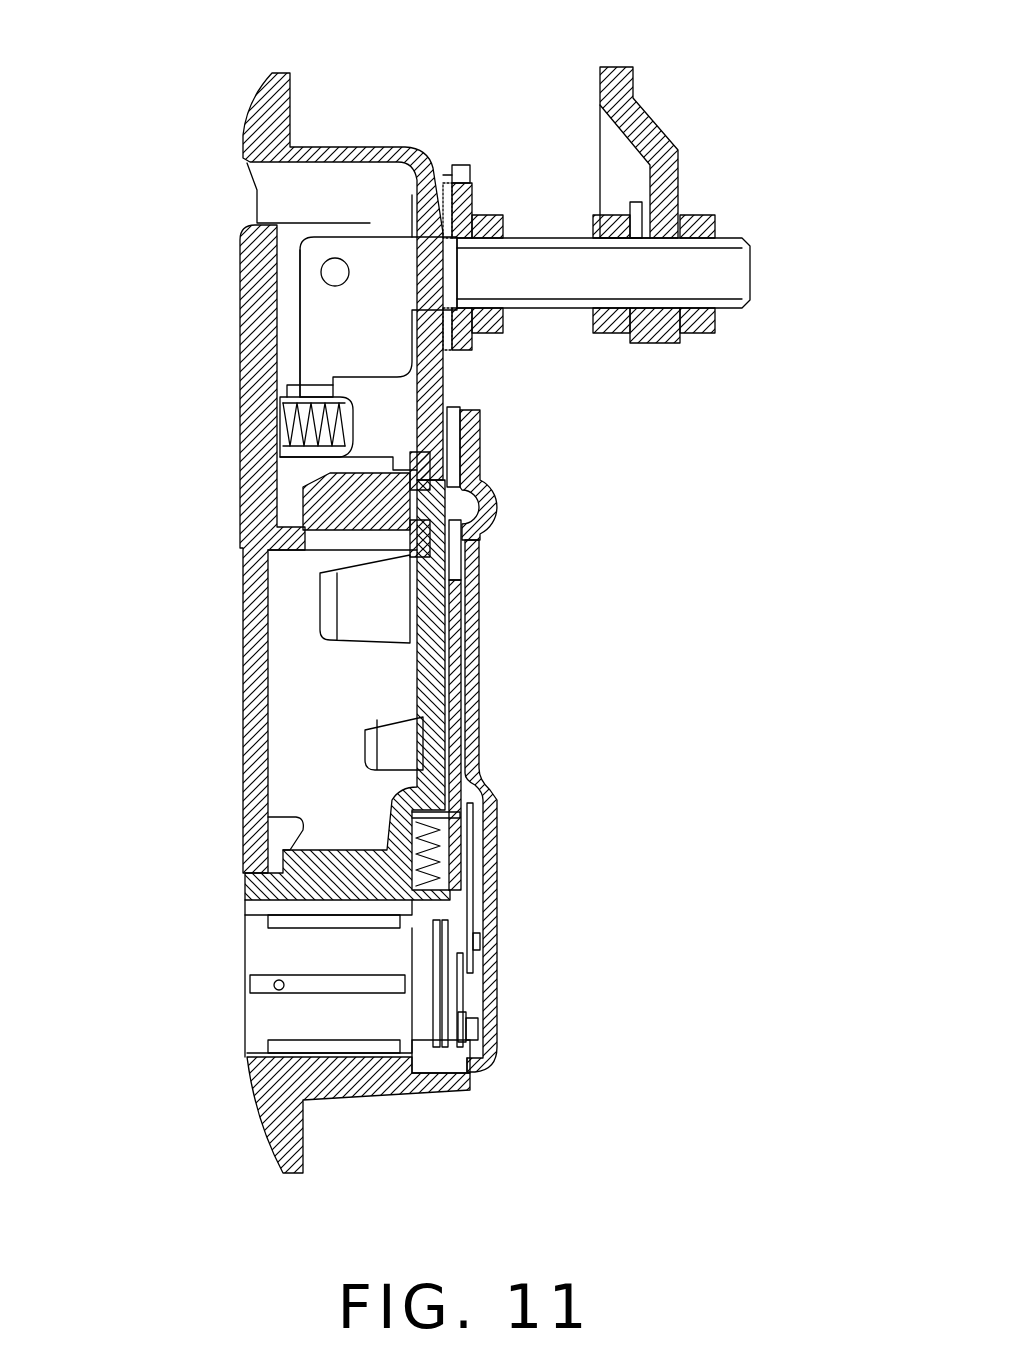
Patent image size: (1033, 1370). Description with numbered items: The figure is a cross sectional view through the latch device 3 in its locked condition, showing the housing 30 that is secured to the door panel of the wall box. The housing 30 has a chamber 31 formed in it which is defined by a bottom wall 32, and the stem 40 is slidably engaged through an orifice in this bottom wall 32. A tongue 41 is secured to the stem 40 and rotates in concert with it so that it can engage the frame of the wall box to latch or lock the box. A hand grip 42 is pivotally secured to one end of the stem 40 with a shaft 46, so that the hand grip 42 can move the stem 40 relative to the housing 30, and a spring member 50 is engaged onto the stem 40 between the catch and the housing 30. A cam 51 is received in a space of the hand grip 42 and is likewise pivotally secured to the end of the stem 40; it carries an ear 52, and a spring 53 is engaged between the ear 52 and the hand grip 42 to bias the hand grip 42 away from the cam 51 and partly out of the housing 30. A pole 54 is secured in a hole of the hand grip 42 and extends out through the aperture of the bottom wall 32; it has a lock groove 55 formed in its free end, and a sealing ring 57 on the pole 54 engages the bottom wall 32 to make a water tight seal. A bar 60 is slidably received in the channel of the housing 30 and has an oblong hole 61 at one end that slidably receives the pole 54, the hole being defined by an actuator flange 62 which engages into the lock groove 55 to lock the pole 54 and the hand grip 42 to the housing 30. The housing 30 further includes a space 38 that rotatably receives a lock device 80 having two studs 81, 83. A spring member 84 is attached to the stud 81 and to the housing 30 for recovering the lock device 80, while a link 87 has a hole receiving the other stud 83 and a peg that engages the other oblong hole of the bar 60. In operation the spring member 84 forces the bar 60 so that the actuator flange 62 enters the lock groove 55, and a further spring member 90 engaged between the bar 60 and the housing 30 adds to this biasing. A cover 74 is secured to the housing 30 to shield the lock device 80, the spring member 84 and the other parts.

The latch device 3 is at (475, 100).
The housing 30 is at (320, 150).
The chamber 31 is at (300, 683).
The bottom wall 32 is at (435, 695).
The space 38 is at (300, 1035).
The stem 40 is at (737, 258).
The tongue 41 is at (640, 118).
The hand grip 42 is at (250, 742).
The shaft 46 is at (330, 270).
The spring member 50 is at (470, 338).
The cam 51 is at (300, 330).
The ear 52 is at (297, 455).
The spring 53 is at (297, 413).
The pole 54 is at (300, 505).
The lock groove 55 is at (470, 510).
The sealing ring 57 is at (403, 463).
The bar 60 is at (460, 650).
The oblong hole 61 is at (455, 448).
The actuator flange 62 is at (470, 546).
The cover 74 is at (488, 1072).
The lock device 80 is at (280, 1010).
The stud 81 is at (470, 1030).
The stud 83 is at (475, 950).
The spring member 84 is at (445, 1050).
The link 87 is at (470, 905).
The spring member 90 is at (450, 840).